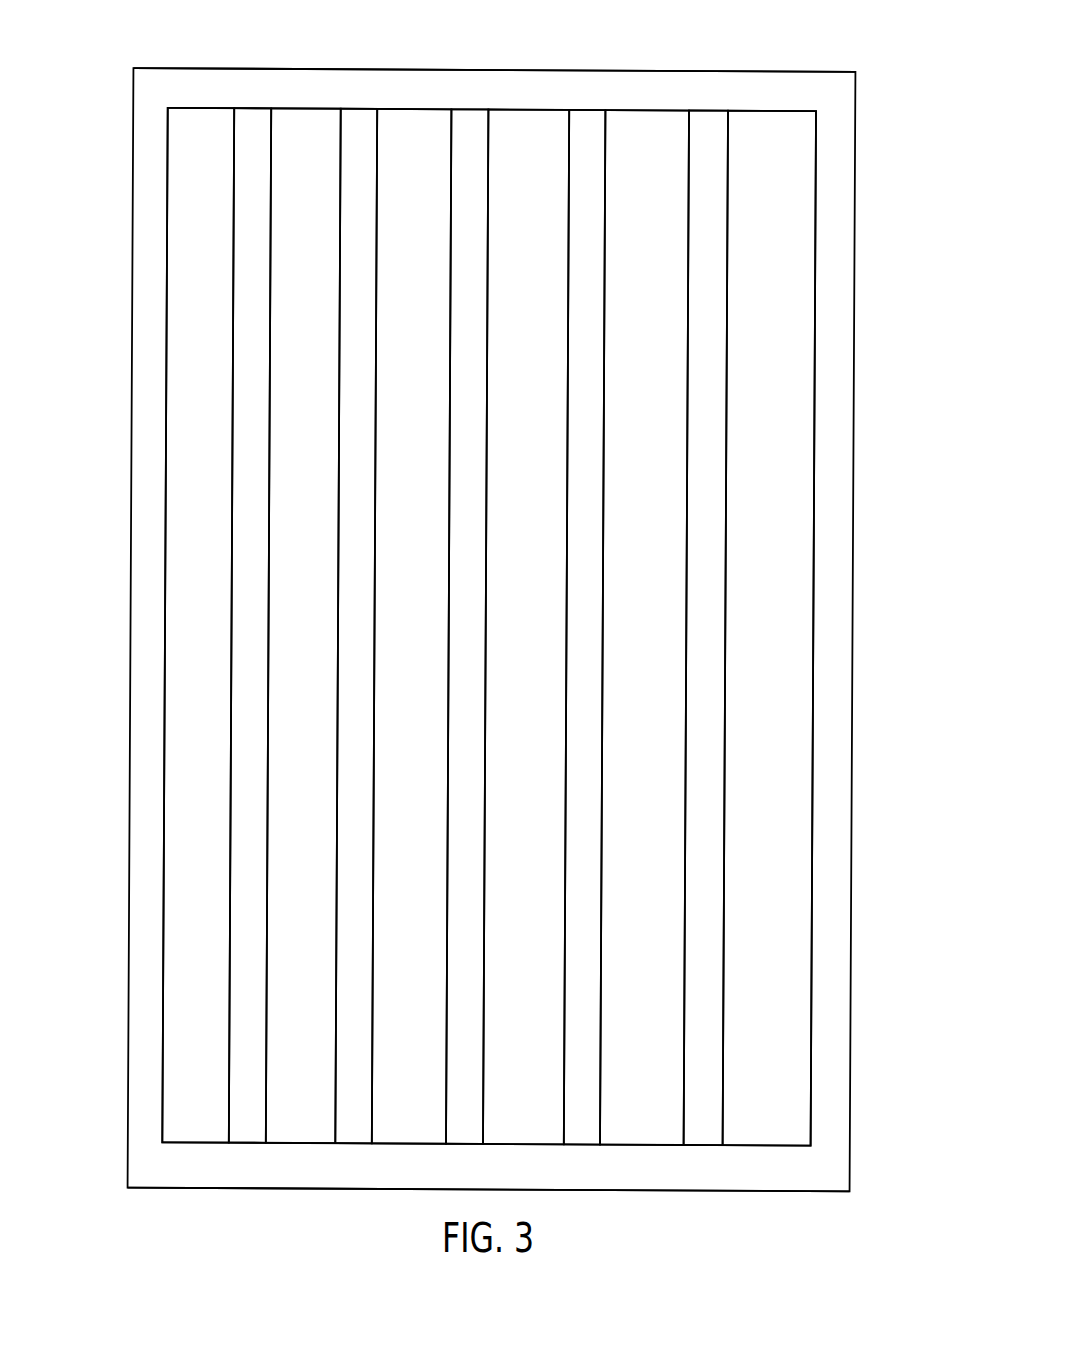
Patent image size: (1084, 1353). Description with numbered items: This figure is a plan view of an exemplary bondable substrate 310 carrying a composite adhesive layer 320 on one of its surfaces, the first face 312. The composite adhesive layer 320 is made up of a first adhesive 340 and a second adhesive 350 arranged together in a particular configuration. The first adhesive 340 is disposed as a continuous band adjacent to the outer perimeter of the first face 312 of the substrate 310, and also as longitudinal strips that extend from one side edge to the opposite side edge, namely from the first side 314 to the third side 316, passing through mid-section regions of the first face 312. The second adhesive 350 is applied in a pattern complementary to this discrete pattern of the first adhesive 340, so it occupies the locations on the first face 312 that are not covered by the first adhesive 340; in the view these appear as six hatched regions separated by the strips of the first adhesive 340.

The bondable substrate 310 is at (112, 187).
The first face 312 is at (641, 88).
The first side 314 is at (345, 69).
The third side 316 is at (613, 1190).
The composite adhesive layer 320 is at (831, 165).
The first adhesive 340 is at (470, 438).
The second adhesive 350 is at (181, 665).